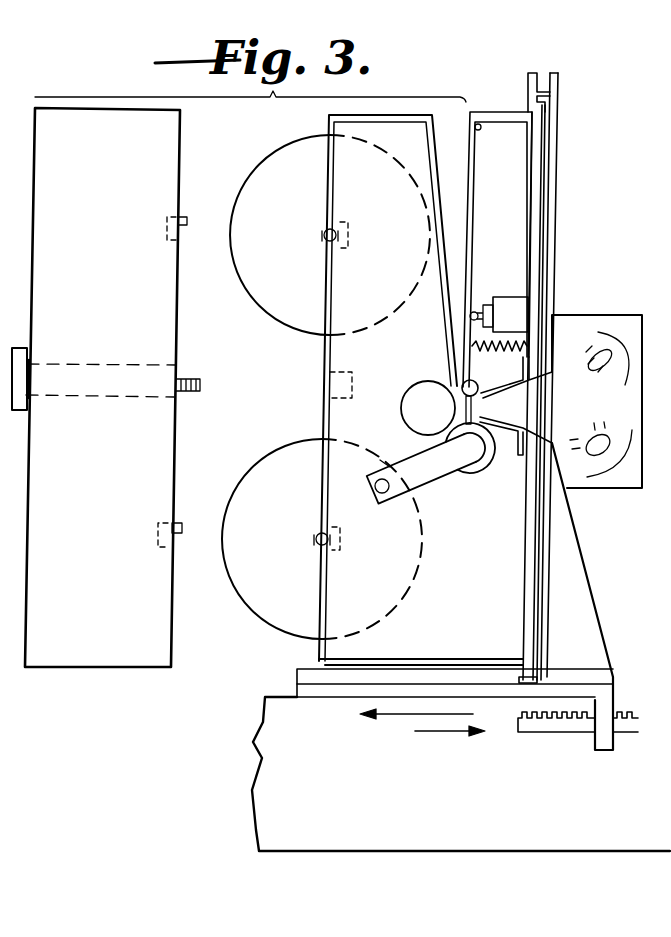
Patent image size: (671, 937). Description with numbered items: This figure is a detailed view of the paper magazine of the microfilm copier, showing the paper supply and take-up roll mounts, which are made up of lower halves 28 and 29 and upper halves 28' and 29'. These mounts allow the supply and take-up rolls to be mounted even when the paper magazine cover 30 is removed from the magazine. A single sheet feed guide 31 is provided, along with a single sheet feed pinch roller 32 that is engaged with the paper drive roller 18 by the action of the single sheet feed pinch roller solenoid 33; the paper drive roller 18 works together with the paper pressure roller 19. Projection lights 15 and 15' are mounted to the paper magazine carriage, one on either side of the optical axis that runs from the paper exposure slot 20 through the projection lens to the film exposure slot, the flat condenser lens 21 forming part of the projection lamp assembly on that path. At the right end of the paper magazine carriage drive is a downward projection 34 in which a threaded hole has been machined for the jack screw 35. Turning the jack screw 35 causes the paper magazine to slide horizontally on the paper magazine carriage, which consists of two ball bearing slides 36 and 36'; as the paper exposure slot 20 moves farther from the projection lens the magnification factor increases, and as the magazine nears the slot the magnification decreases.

The paper projector light 15 is at (597, 389).
The paper projector light 15' is at (609, 481).
The paper drive roller 18 is at (432, 378).
The paper pressure roller 19 is at (479, 476).
The paper exposure slot 20 is at (473, 405).
The flat condenser lens 21 is at (3, 684).
The lower half of paper roll mount 28 is at (322, 539).
The upper half of paper roll mount 28' is at (187, 559).
The lower half of paper roll mount 29 is at (330, 235).
The upper half of paper roll mount 29' is at (197, 207).
The paper magazine cover 30 is at (112, 387).
The single sheet feed guide 31 is at (461, 205).
The single sheet feed pinch roller 32 is at (512, 398).
The single sheet feed pinch roller solenoid 33 is at (499, 315).
The downward projection 34 is at (606, 740).
The jack screw 35 is at (524, 733).
The ball bearing slide 36 is at (422, 663).
The ball bearing slide 36' is at (397, 686).